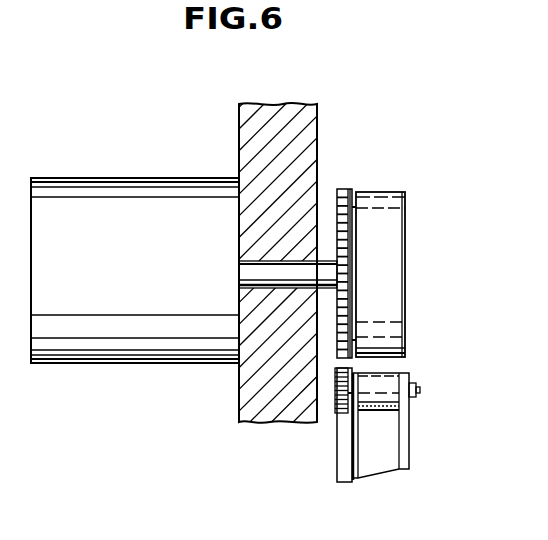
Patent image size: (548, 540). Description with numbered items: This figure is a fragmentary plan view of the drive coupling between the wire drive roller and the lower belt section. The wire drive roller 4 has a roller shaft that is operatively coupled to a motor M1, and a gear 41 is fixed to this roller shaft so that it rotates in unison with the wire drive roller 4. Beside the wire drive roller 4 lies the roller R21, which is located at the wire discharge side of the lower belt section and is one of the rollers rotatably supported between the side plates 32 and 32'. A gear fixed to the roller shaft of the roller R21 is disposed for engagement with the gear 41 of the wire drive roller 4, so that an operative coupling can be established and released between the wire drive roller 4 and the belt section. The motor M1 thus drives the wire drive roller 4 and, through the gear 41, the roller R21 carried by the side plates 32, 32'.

The motor M1 is at (162, 336).
The gear 41 is at (345, 189).
The wire drive roller 4 is at (392, 255).
The side plate 32' is at (305, 425).
The side plate 32 is at (414, 426).
The roller R21 is at (385, 385).